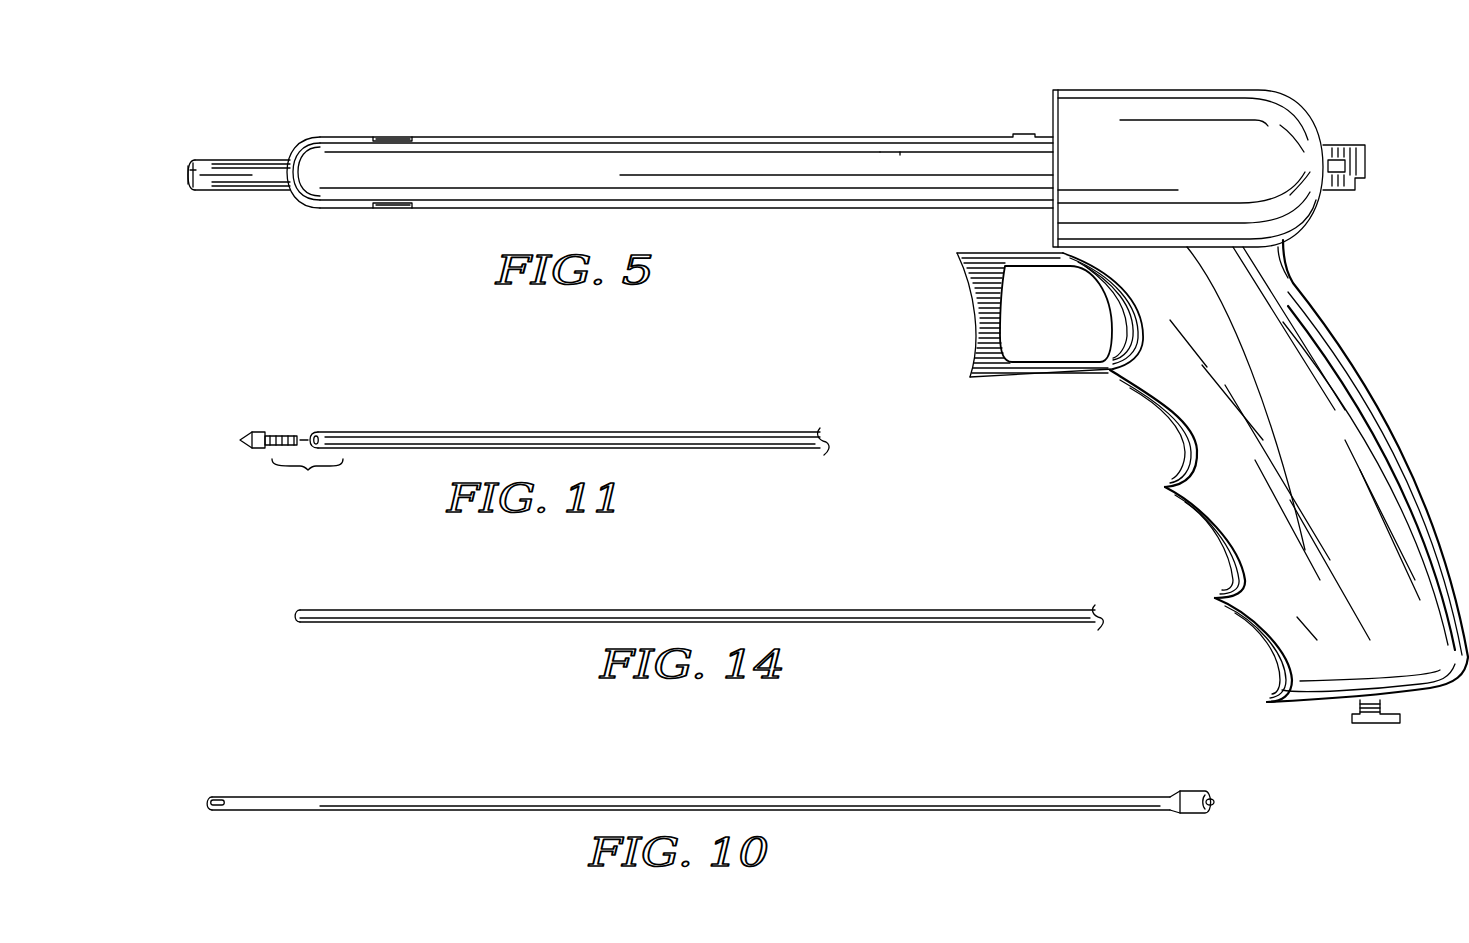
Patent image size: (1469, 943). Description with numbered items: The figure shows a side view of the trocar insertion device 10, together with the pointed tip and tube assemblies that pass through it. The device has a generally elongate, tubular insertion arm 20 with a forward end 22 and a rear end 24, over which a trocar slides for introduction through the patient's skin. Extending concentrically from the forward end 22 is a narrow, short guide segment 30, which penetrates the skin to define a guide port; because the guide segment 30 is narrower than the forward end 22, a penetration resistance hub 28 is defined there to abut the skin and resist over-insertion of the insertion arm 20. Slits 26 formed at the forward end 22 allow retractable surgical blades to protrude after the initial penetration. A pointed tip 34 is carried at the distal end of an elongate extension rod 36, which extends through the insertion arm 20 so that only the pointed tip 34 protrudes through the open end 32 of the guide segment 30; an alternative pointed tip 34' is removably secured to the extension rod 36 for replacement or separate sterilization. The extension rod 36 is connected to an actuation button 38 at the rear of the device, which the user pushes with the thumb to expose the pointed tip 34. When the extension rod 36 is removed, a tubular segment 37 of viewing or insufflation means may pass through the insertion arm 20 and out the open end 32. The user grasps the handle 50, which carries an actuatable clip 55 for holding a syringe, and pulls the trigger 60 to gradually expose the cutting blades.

In FIG. 5, the trocar insertion device 10 is at (1185, 60).
In FIG. 5, the insertion arm 20 is at (690, 137).
In FIG. 5, the forward end 22 is at (308, 172).
In FIG. 5, the rear end 24 is at (995, 162).
In FIG. 5, the slits 26 is at (376, 203).
In FIG. 5, the penetration resistance hub 28 is at (293, 150).
In FIG. 5, the guide segment 30 is at (210, 160).
In FIG. 5, the open end 32 is at (190, 178).
In FIG. 10, the pointed tip 34 is at (211, 769).
In FIG. 11, the pointed tip 34' is at (290, 412).
In FIG. 11, the extension rod 36 is at (512, 436).
In FIG. 10, the extension rod 36 is at (685, 796).
In FIG. 14, the tubular segment 37 is at (596, 607).
In FIG. 5, the actuation button 38 is at (1350, 146).
In FIG. 5, the handle 50 is at (1392, 423).
In FIG. 5, the actuatable clip 55 is at (1388, 716).
In FIG. 5, the trigger 60 is at (965, 268).